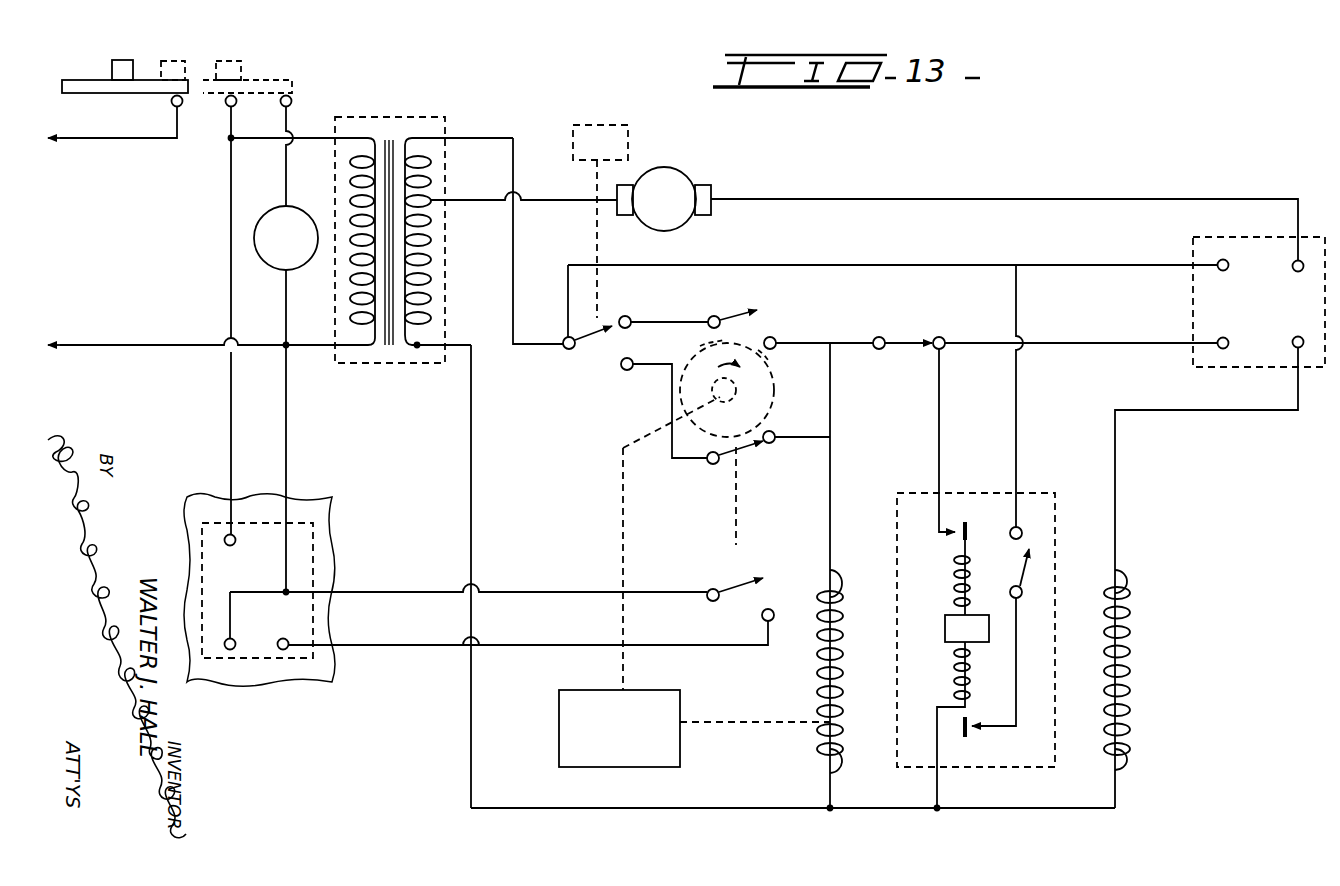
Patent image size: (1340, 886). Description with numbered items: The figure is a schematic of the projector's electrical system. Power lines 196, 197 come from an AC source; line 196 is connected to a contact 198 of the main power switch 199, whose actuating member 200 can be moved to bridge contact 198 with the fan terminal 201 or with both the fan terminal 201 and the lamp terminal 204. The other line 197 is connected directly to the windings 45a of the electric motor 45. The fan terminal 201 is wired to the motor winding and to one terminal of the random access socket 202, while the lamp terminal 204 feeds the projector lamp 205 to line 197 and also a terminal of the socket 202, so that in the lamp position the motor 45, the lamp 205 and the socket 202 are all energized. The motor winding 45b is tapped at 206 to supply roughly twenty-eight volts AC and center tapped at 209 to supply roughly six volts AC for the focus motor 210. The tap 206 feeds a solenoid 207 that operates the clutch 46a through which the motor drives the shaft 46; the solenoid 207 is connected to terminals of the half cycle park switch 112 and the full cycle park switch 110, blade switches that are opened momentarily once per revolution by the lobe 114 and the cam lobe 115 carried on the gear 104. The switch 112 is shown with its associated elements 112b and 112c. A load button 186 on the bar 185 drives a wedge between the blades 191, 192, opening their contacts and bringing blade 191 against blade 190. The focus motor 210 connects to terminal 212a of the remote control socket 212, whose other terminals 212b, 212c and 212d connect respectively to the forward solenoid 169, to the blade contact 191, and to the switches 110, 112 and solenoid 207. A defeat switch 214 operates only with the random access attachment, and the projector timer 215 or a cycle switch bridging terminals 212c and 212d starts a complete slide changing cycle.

The main power switch 199 is at (262, 70).
The actuating member 200 is at (100, 90).
The contact 198 is at (171, 103).
The power line 196 is at (126, 140).
The fan terminal 201 is at (224, 108).
The lamp terminal 204 is at (292, 101).
The projector lamp 205 is at (280, 217).
The power line 197 is at (124, 343).
The electric motor 45 is at (400, 118).
The motor windings 45a is at (350, 300).
The motor winding 45b is at (437, 286).
The center tap 209 is at (434, 198).
The tap 206 is at (417, 348).
The load button 186 is at (610, 145).
The bar 185 is at (597, 244).
The focus motor 210 is at (664, 182).
The blade 191 is at (566, 350).
The blade 192 is at (625, 316).
The full cycle park switch 110 is at (763, 328).
The lobe 114 is at (710, 336).
The cam lobe 115 is at (769, 359).
The shaft 46 is at (732, 396).
The gear 104 is at (765, 400).
The blade 190 is at (628, 370).
The half cycle park switch 112 is at (770, 448).
The switch linkage 112c is at (735, 544).
The switch 112b is at (756, 603).
The random access socket 202 is at (320, 537).
The solenoid operated clutch 46a is at (576, 701).
The solenoid 207 is at (843, 696).
The defeat switch 214 is at (908, 336).
The projector timer 215 is at (912, 492).
The forward solenoid 169 is at (1133, 698).
The remote control socket 212 is at (1241, 251).
The terminal 212a is at (1298, 272).
The terminal 212b is at (1299, 336).
The terminal 212c is at (1219, 269).
The terminal 212d is at (1218, 346).